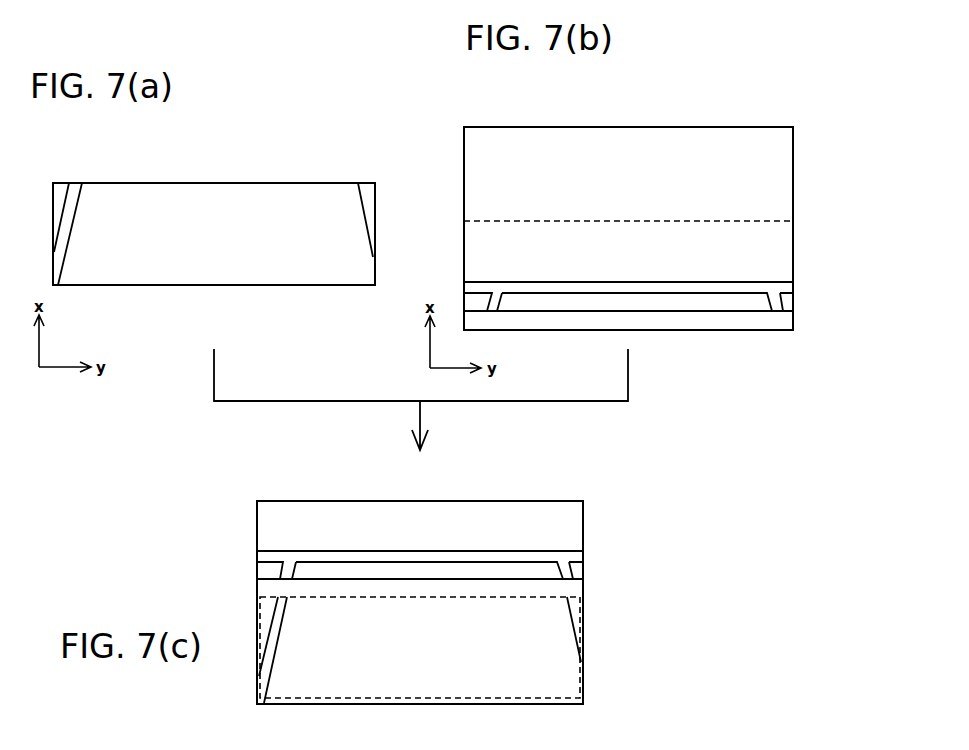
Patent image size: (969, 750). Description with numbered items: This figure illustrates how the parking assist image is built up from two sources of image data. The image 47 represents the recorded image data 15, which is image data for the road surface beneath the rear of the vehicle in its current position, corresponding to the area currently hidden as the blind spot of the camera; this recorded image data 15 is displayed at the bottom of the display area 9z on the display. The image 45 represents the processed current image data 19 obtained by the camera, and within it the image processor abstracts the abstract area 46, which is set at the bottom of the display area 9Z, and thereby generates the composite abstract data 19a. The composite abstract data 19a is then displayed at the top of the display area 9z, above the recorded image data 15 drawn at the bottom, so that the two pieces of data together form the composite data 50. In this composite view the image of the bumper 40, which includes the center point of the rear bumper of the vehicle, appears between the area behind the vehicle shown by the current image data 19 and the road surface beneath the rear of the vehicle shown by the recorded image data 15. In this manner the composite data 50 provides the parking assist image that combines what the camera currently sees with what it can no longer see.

In FIG. 7A, the image 47 is at (214, 213).
In FIG. 7A, the recorded image data 15 is at (144, 189).
In FIG. 7C, the recorded image data 15 is at (567, 638).
In FIG. 7B, the image 45 is at (628, 207).
In FIG. 7B, the current image data 19 is at (555, 136).
In FIG. 7B, the abstract area 46 is at (647, 221).
In FIG. 7B, the display area 9Z is at (793, 177).
In FIG. 7B, the composite abstract data 19a is at (472, 247).
In FIG. 7C, the composite abstract data 19a is at (578, 531).
In FIG. 7B, the image of the bumper 40 is at (777, 323).
In FIG. 7C, the image of the bumper 40 is at (580, 589).
In FIG. 7C, the composite data 50 is at (257, 527).
In FIG. 7C, the display area 9z is at (583, 680).